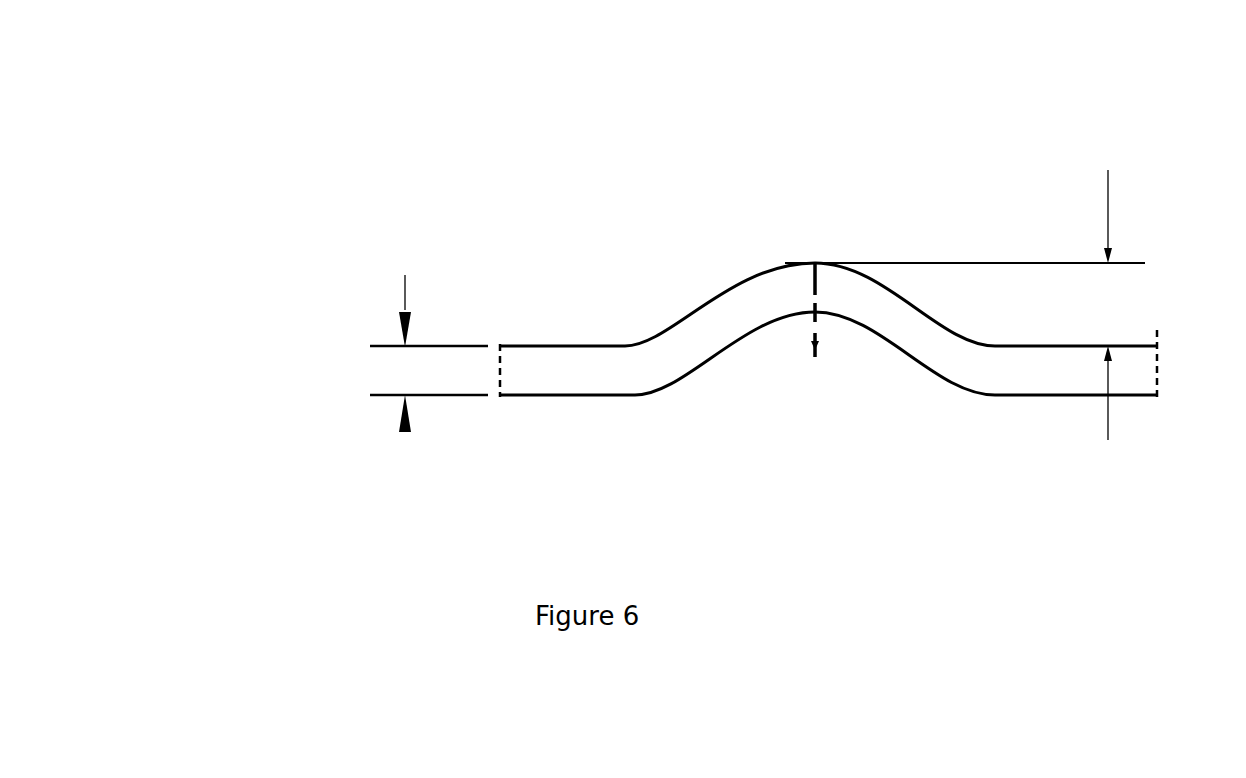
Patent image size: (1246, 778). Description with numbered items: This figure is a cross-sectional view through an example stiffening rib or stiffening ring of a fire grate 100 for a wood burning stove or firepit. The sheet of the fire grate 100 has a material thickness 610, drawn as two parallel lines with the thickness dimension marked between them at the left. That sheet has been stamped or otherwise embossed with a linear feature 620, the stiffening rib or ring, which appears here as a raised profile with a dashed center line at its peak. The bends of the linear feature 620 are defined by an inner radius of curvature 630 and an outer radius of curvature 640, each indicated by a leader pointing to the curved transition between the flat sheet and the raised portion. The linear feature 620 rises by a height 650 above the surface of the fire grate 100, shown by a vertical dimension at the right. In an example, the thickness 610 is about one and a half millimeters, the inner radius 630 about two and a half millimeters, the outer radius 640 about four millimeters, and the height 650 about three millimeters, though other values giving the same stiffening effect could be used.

The fire grate 100 is at (193, 150).
The material thickness 610 is at (405, 430).
The linear feature 620 is at (807, 250).
The inner radius of curvature 630 is at (912, 378).
The outer radius of curvature 640 is at (700, 293).
The height 650 is at (965, 305).